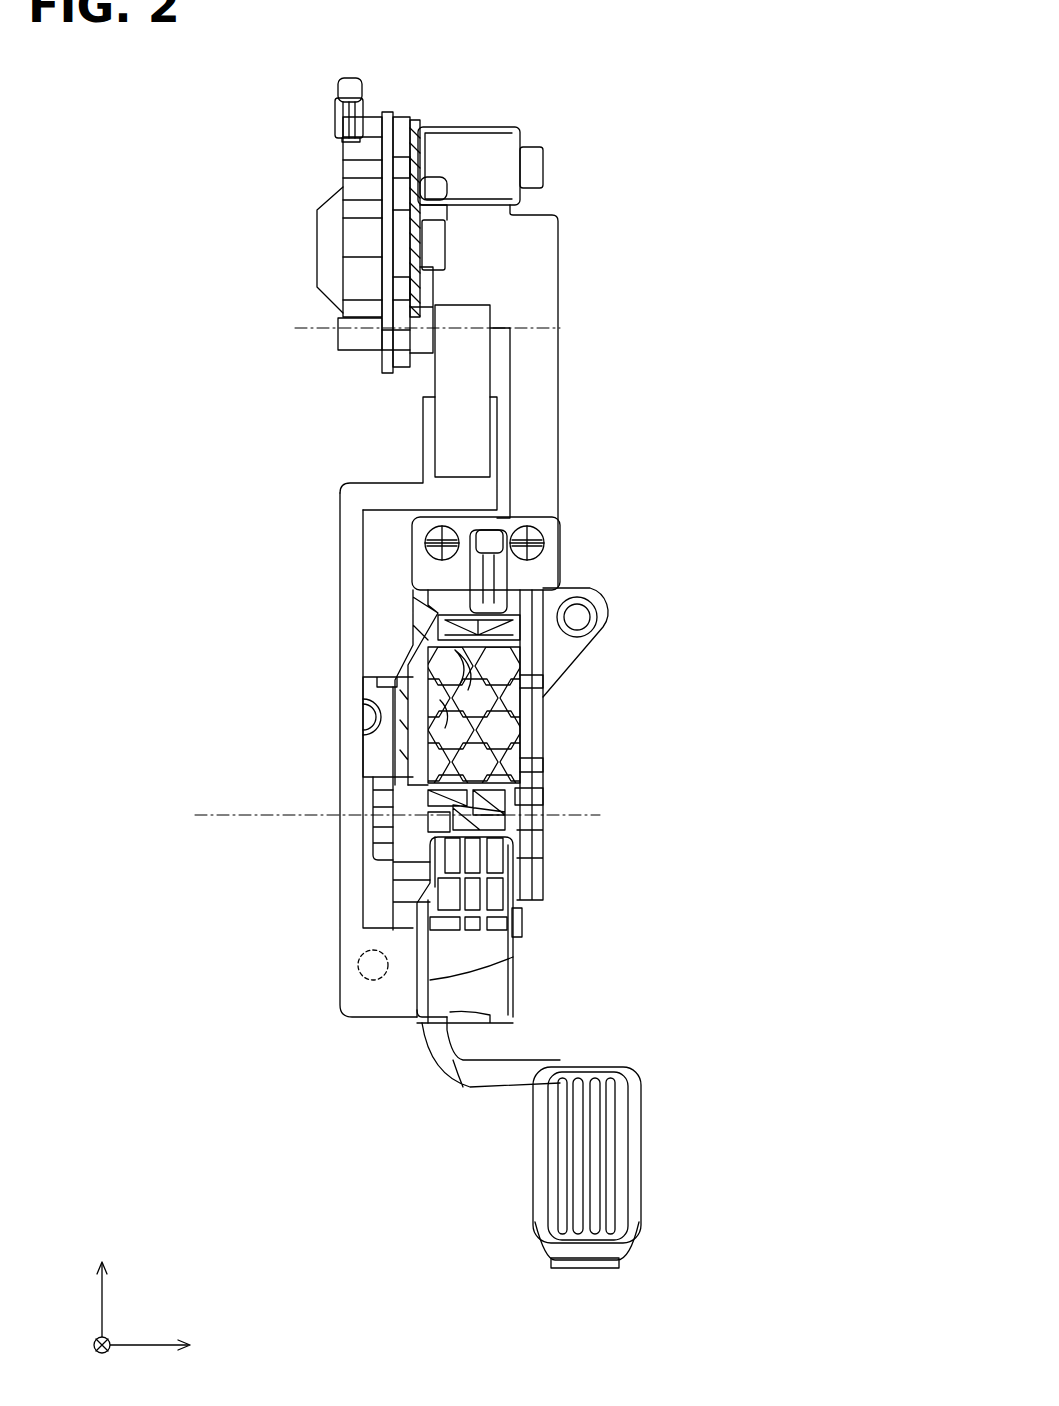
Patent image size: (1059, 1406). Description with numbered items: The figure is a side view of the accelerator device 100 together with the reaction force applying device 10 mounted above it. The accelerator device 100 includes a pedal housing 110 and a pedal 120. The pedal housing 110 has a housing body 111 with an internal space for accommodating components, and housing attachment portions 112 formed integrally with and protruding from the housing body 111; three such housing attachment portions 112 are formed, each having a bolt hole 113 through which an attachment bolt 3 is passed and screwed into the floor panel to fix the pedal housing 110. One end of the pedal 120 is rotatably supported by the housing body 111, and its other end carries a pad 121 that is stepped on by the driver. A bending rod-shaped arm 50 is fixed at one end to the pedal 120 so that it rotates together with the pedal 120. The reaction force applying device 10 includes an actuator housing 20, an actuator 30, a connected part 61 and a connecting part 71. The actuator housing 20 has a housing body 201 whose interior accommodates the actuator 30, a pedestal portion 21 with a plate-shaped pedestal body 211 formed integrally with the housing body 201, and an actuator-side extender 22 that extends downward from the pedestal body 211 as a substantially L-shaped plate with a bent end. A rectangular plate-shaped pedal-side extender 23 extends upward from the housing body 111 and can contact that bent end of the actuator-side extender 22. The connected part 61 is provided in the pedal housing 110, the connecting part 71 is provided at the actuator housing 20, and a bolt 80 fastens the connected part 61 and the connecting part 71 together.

The reaction force applying device 10 is at (529, 62).
The actuator housing 20 is at (330, 203).
The housing body 201 is at (335, 242).
The actuator 30 is at (487, 166).
The pedestal portion 21 is at (490, 232).
The pedestal body 211 is at (490, 258).
The actuator-side extender 22 is at (540, 490).
The pedal-side extender 23 is at (545, 590).
The arm 50 is at (350, 622).
The connected part 61 is at (428, 545).
The connecting part 71 is at (470, 580).
The bolt 80 is at (470, 565).
The accelerator device 100 is at (628, 690).
The pedal housing 110 is at (510, 735).
The housing body 111 is at (535, 766).
The housing attachment portion 112 is at (575, 655).
The bolt hole 113 is at (598, 610).
The attachment bolt 3 is at (590, 625).
The pedal 120 is at (470, 1088).
The pad 121 is at (600, 1160).